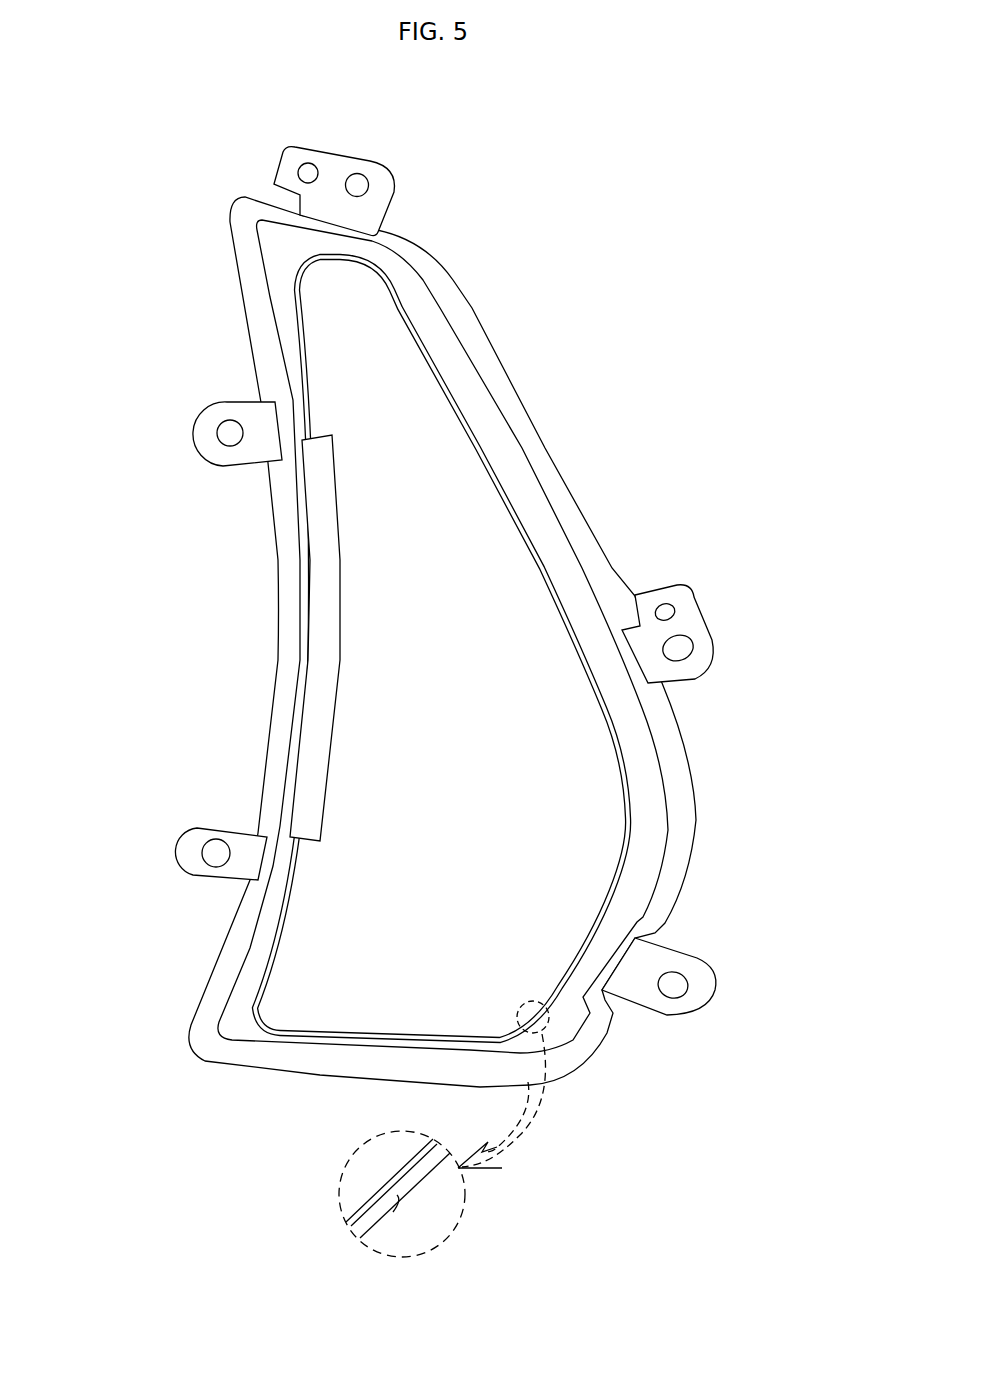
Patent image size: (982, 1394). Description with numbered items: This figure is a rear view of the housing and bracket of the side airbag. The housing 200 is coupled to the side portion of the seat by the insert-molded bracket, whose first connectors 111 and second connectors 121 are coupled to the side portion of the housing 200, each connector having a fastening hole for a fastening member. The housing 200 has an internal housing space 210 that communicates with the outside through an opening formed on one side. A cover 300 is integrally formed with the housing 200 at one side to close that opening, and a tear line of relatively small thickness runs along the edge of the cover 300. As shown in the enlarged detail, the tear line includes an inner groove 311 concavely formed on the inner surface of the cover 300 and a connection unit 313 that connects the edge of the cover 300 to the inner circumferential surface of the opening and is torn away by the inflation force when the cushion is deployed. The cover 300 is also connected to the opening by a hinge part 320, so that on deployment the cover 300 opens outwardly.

The first connector 111 is at (207, 430).
The second connector 121 is at (338, 167).
The housing 200 is at (493, 367).
The housing space 210 is at (516, 494).
The cover 300 is at (567, 807).
The inner groove 311 is at (397, 1212).
The connection unit 313 is at (412, 1180).
The hinge part 320 is at (320, 603).